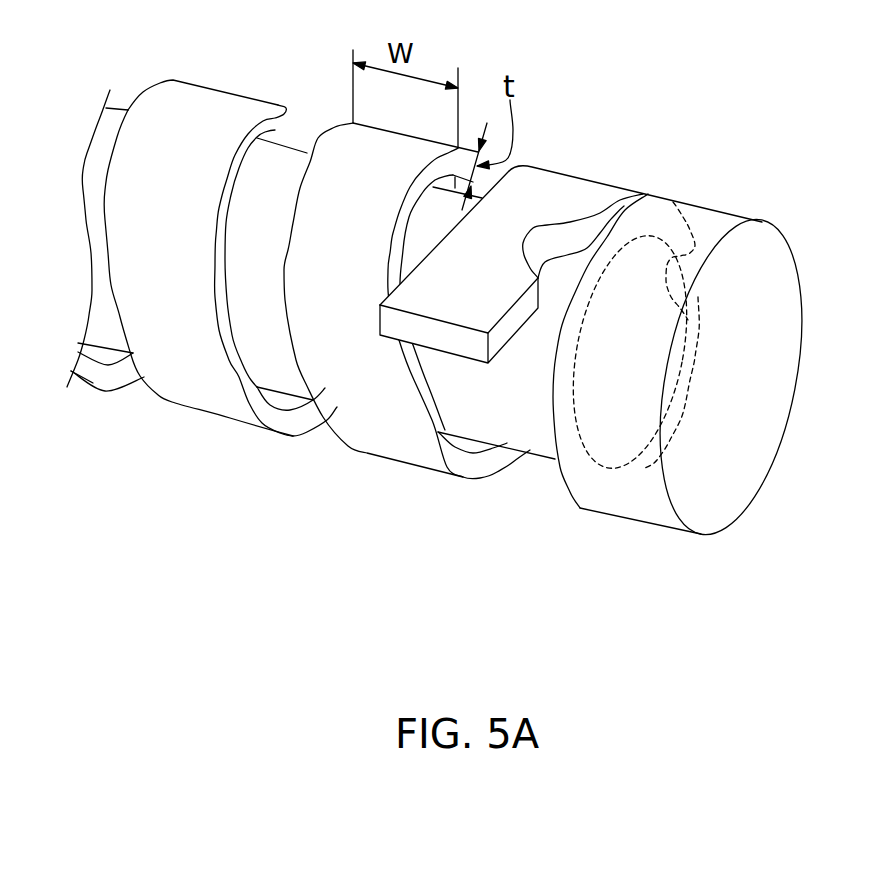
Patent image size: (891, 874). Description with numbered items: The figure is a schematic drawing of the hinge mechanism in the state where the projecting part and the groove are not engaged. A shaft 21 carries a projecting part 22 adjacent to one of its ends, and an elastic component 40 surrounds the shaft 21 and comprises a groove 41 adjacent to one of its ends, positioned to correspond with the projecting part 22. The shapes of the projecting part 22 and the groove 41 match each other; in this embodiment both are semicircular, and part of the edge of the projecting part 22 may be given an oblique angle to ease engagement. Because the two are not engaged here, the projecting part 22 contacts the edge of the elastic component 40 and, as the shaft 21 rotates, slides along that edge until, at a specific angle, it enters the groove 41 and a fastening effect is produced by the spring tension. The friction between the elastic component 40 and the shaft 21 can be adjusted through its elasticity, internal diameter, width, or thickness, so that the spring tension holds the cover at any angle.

The shaft 21 is at (283, 160).
The projecting part 22 is at (698, 268).
The elastic component 40 is at (380, 443).
The groove 41 is at (558, 243).